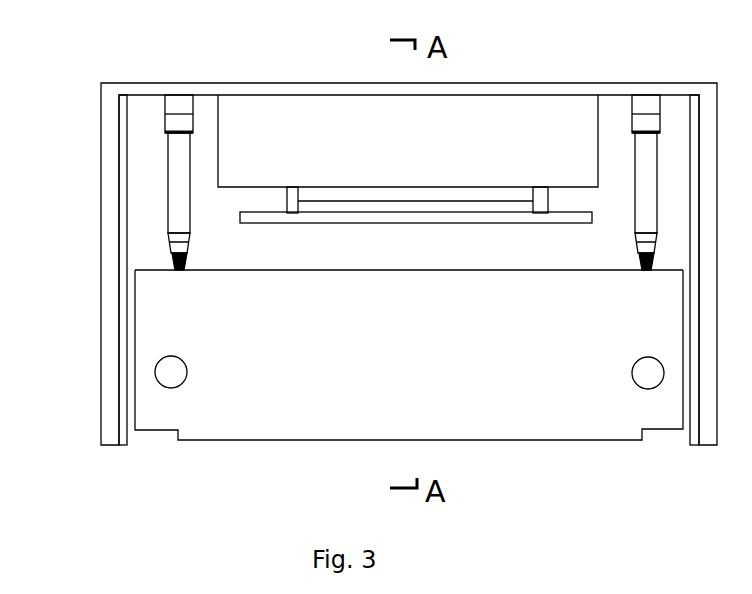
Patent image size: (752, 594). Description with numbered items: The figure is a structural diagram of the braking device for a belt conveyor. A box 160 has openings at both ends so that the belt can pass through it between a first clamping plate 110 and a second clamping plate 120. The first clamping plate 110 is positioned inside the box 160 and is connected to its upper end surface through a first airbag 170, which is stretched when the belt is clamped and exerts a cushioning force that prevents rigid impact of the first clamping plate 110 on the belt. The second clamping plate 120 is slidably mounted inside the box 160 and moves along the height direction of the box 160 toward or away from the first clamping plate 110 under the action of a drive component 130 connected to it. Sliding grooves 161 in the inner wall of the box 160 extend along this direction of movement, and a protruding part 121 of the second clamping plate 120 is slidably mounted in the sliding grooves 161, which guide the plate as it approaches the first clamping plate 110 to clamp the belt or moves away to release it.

The first clamping plate 110 is at (480, 178).
The second clamping plate 120 is at (452, 270).
The protruding part 121 is at (130, 270).
The drive component 130 is at (178, 150).
The box 160 is at (98, 165).
The sliding groove 161 is at (120, 245).
The first airbag 170 is at (575, 112).